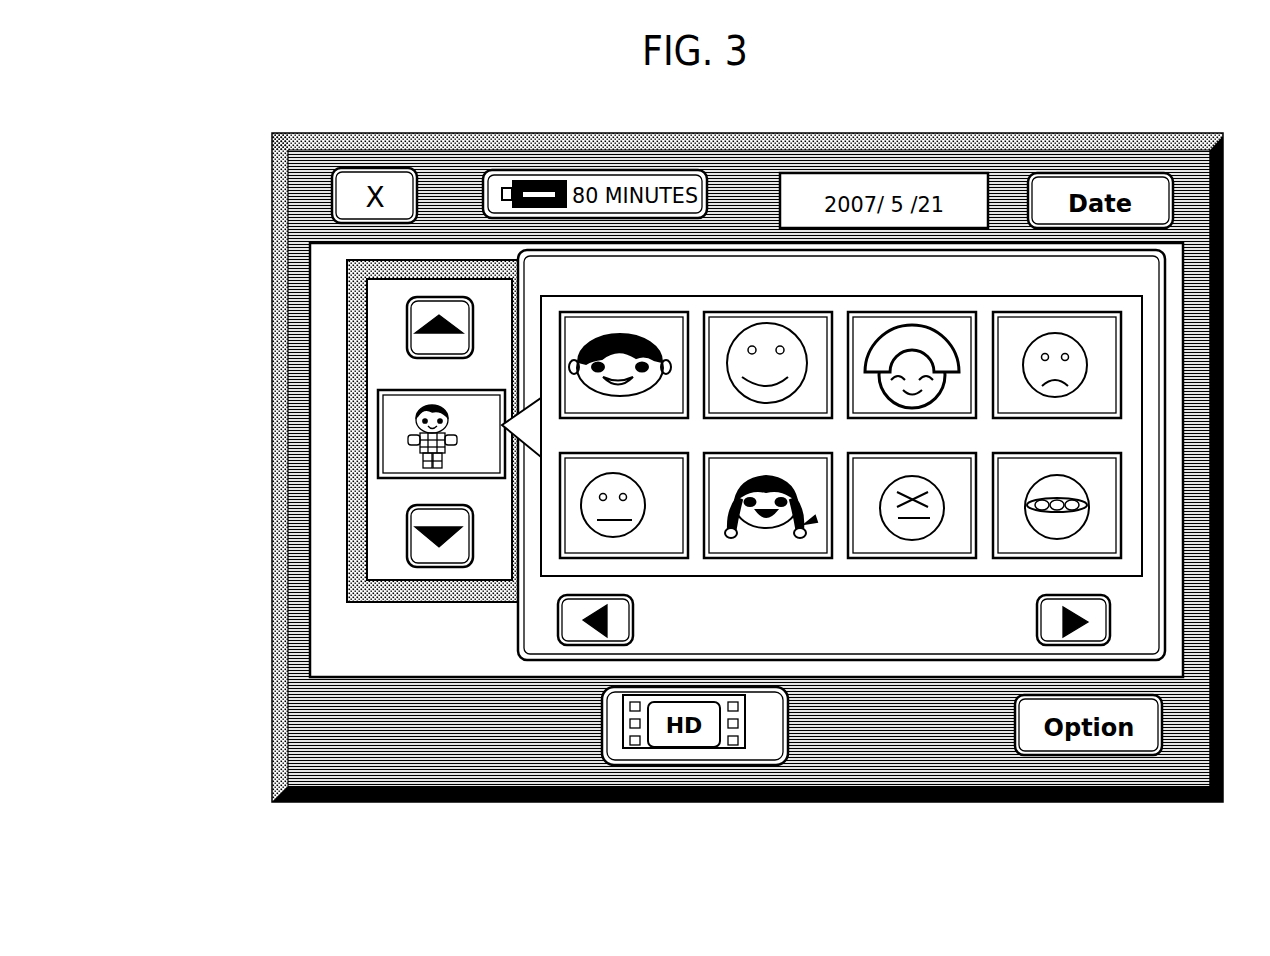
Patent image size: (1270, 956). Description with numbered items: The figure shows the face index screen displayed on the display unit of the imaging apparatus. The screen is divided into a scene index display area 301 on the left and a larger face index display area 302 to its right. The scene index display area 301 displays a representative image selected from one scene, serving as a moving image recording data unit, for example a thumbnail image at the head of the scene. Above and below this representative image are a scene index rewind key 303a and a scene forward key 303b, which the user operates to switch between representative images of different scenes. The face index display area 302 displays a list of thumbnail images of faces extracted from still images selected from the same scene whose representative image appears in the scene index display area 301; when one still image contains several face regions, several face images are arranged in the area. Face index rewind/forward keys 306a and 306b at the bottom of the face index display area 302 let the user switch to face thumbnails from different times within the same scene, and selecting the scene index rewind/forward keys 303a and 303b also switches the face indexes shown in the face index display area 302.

The scene index display area 301 is at (362, 422).
The face index display area 302 is at (833, 366).
The scene index rewind key 303a is at (403, 325).
The scene forward key 303b is at (407, 532).
The face index rewind key 306a is at (597, 646).
The face index forward key 306b is at (1037, 638).